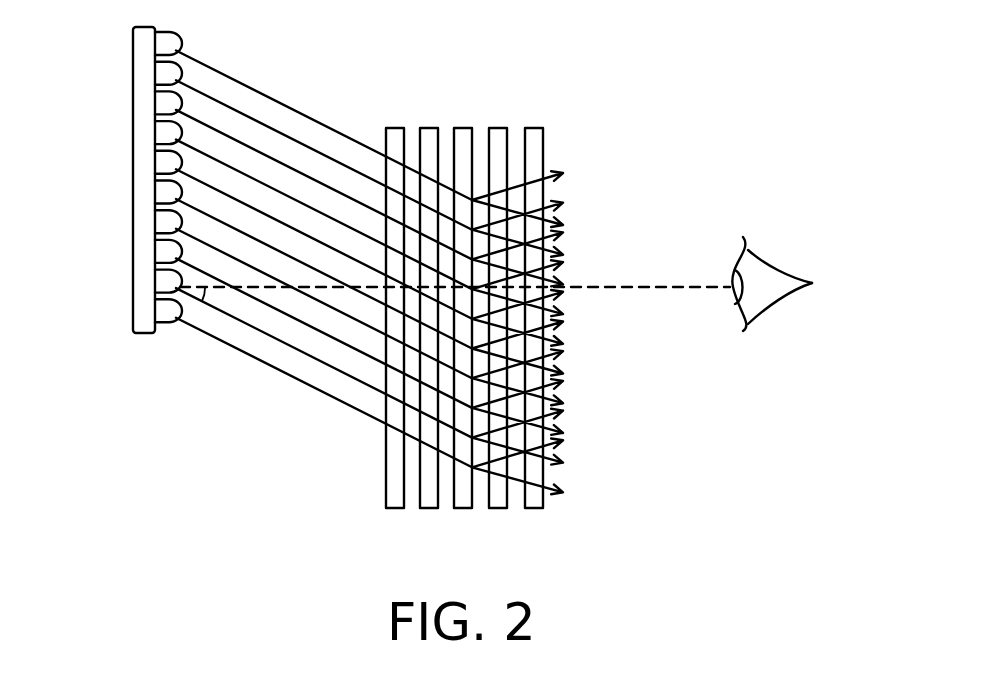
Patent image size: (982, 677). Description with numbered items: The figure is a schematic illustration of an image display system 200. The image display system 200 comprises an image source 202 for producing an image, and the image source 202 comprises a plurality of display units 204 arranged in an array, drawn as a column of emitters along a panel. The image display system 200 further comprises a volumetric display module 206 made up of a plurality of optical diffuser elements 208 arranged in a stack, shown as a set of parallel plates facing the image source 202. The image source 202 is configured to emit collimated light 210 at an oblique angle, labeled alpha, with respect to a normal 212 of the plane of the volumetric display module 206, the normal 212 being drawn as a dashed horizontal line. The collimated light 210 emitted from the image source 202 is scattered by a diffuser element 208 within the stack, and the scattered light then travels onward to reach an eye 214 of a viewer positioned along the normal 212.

The image display system 200 is at (606, 74).
The image source 202 is at (140, 113).
The display units 204 is at (170, 314).
The volumetric display module 206 is at (476, 104).
The optical diffuser elements 208 is at (533, 498).
The collimated light 210 is at (315, 302).
The normal 212 is at (603, 287).
The eye 214 is at (771, 284).